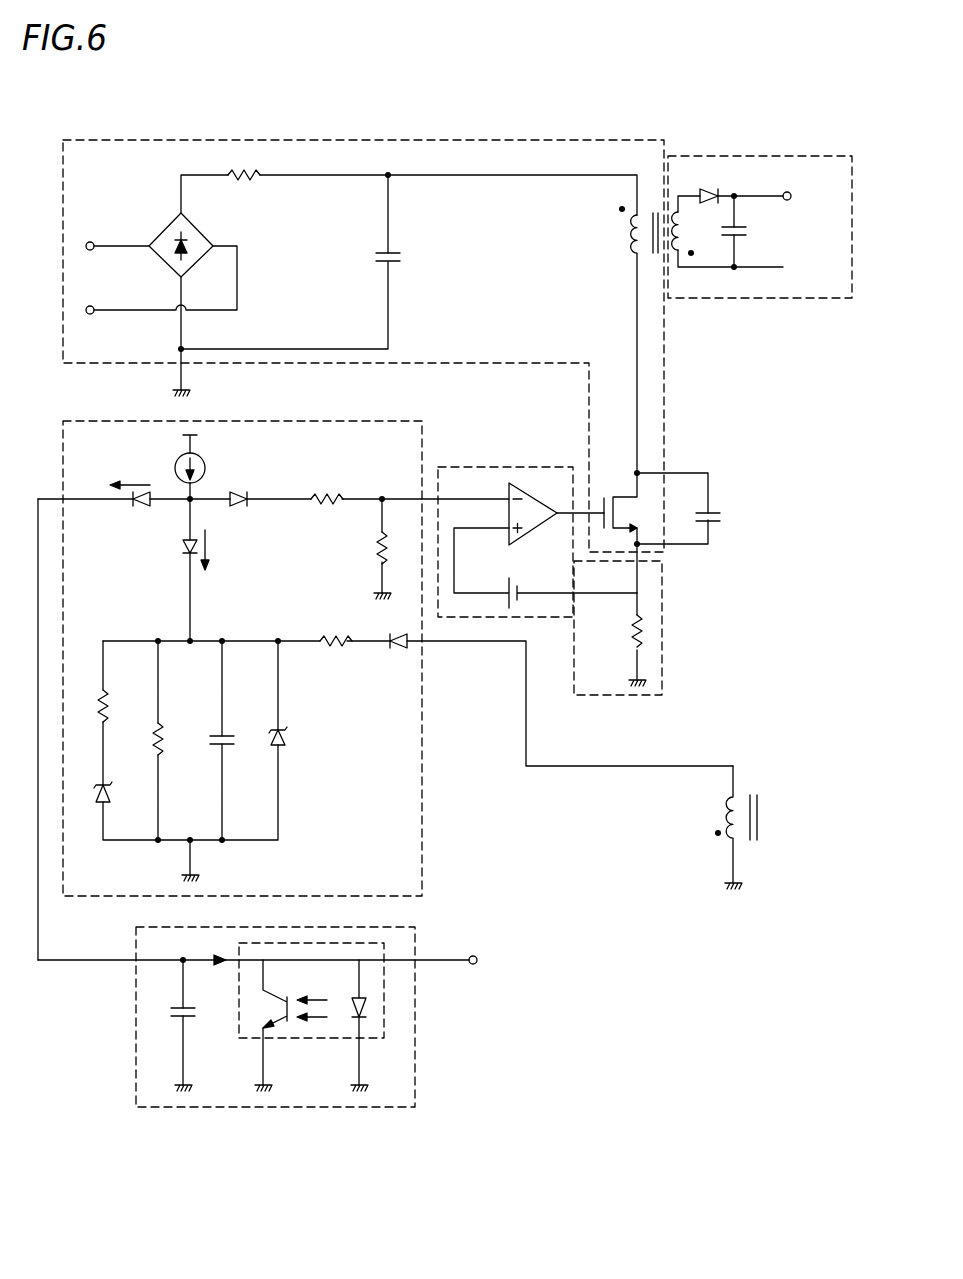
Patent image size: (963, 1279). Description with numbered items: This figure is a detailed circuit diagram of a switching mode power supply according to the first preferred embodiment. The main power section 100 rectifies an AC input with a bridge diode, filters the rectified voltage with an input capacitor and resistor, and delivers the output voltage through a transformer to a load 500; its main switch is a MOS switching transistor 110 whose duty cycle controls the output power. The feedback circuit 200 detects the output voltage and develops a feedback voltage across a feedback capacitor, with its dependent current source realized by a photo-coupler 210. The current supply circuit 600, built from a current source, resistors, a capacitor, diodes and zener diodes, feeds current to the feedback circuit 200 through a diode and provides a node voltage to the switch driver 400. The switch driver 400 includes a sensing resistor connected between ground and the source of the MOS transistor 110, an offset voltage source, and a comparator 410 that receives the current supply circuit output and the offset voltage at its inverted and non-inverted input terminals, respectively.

The main power section 100 is at (665, 433).
The MOS switching transistor 110 is at (618, 497).
The feedback circuit 200 is at (284, 1017).
The photo-coupler 210 is at (384, 1005).
The switch driver 400 is at (662, 627).
The comparator 410 is at (532, 467).
The load 500 is at (805, 156).
The current supply circuit 600 is at (422, 808).